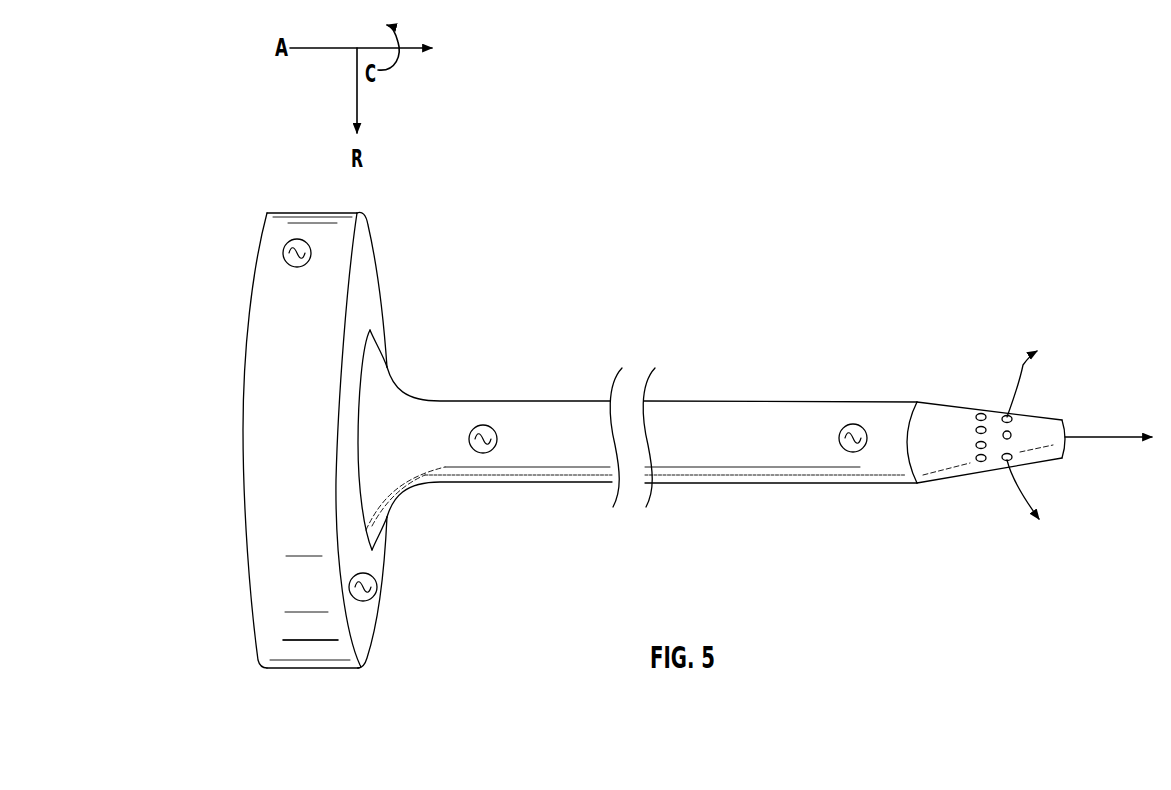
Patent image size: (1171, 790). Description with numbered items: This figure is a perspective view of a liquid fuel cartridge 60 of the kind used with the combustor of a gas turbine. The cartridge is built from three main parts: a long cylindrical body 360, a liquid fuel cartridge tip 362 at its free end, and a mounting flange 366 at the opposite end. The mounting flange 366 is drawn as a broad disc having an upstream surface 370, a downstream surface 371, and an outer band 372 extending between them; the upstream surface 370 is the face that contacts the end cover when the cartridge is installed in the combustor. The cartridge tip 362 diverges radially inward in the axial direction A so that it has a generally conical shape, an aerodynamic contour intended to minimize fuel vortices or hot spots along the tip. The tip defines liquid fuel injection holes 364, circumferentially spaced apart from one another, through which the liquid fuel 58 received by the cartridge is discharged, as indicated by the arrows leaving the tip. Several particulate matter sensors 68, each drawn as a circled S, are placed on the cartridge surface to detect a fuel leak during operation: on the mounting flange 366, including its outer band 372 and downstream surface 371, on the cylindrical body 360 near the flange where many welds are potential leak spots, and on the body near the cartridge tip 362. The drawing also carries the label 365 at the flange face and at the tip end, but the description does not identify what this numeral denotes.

The liquid fuel 58 is at (1023, 365).
The liquid fuel cartridge 60 is at (962, 290).
The particulate matter sensor 68 is at (283, 251).
The cylindrical body 360 is at (814, 401).
The liquid fuel cartridge tip 362 is at (948, 403).
The liquid fuel injection holes 364 is at (1005, 440).
The axis / distal end 365 is at (239, 455).
The mounting flange 366 is at (368, 242).
The upstream surface 370 is at (239, 323).
The downstream surface 371 is at (371, 639).
The outer band 372 is at (307, 630).